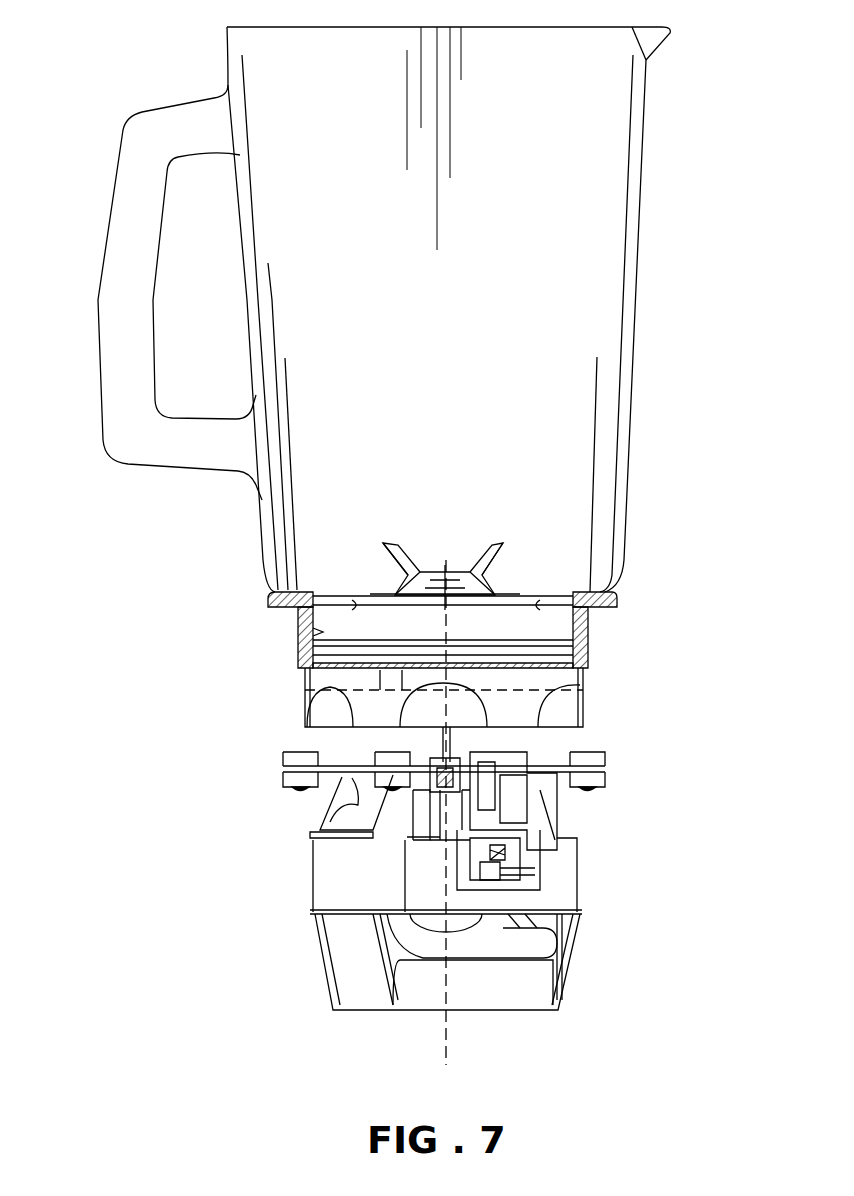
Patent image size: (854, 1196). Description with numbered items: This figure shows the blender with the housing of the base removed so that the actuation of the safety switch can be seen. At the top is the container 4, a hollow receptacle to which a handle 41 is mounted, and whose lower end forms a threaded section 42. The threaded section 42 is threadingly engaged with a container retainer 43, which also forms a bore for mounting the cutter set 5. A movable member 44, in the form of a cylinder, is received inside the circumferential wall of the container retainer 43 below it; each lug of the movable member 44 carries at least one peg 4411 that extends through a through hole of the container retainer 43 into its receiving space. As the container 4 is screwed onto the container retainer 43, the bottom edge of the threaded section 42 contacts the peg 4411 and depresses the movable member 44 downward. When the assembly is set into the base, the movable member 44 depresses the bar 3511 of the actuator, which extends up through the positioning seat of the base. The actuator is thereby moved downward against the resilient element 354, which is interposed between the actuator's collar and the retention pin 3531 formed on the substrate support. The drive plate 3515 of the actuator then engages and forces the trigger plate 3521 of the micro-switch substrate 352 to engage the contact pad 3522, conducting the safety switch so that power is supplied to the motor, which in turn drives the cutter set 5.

The container 4 is at (632, 168).
The handle 41 is at (132, 449).
The cutter set 5 is at (493, 547).
The container retainer 43 is at (615, 603).
The threaded section 42 is at (590, 630).
The peg 4411 is at (590, 677).
The movable member 44 is at (560, 713).
The bar 3511 is at (440, 735).
The micro-switch substrate 352 is at (523, 760).
The resilient element 354 is at (400, 793).
The drive plate 3515 is at (478, 802).
The retention pin 3531 is at (440, 818).
The contact pad 3522 is at (512, 856).
The trigger plate 3521 is at (503, 873).